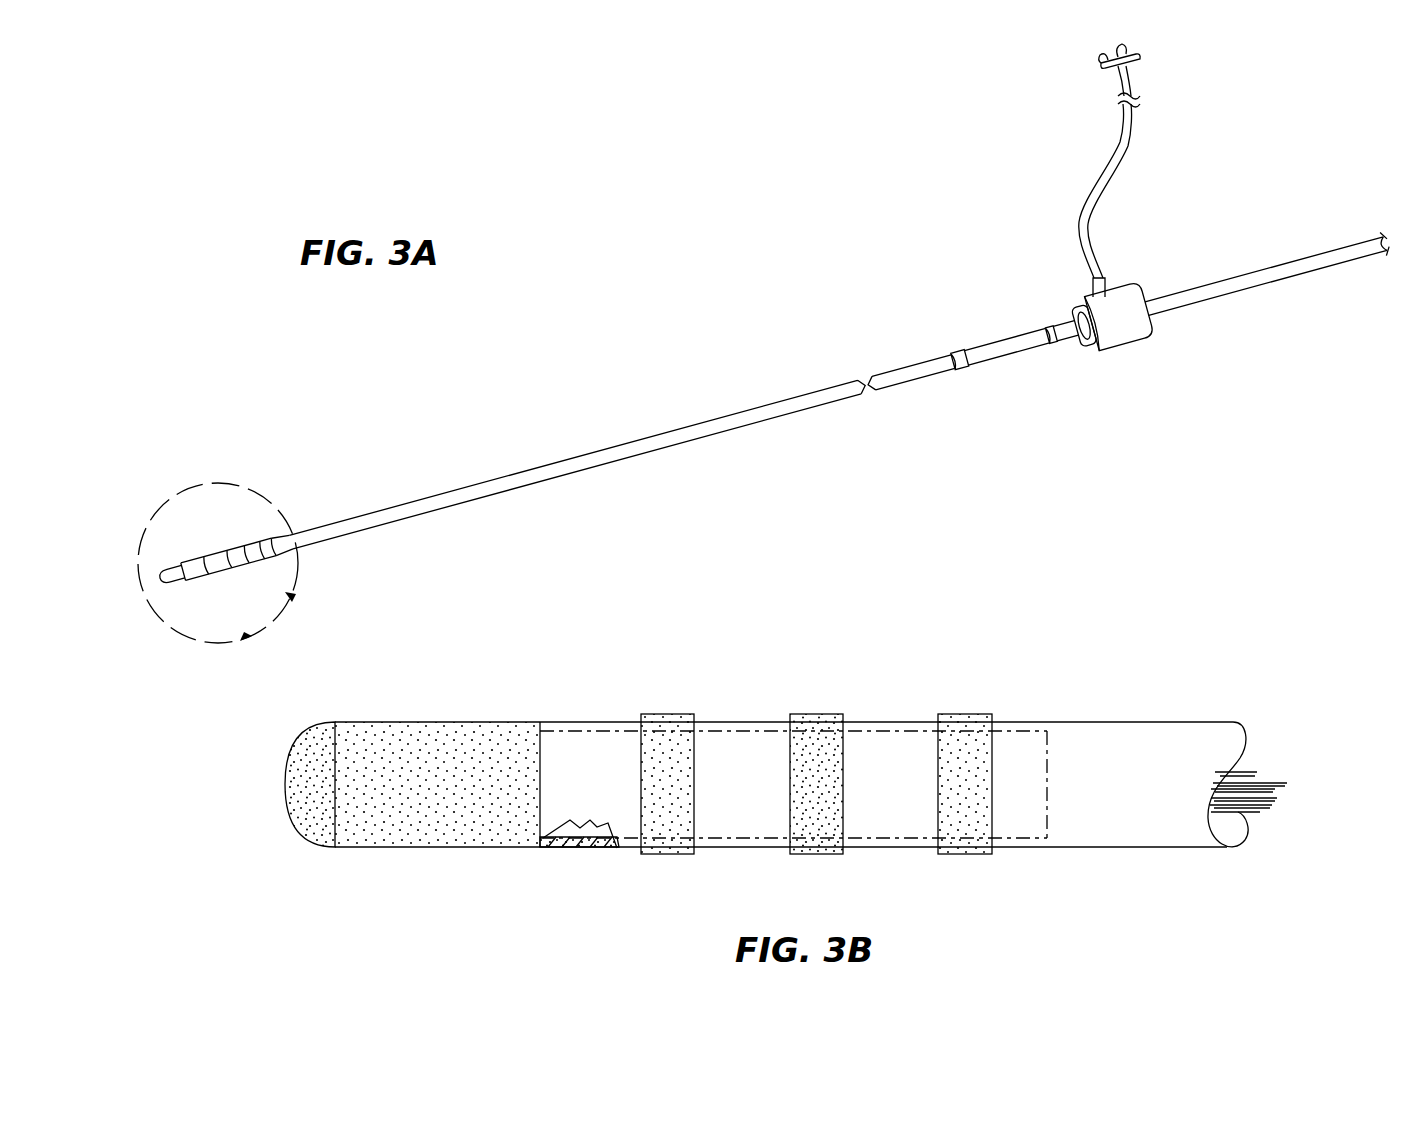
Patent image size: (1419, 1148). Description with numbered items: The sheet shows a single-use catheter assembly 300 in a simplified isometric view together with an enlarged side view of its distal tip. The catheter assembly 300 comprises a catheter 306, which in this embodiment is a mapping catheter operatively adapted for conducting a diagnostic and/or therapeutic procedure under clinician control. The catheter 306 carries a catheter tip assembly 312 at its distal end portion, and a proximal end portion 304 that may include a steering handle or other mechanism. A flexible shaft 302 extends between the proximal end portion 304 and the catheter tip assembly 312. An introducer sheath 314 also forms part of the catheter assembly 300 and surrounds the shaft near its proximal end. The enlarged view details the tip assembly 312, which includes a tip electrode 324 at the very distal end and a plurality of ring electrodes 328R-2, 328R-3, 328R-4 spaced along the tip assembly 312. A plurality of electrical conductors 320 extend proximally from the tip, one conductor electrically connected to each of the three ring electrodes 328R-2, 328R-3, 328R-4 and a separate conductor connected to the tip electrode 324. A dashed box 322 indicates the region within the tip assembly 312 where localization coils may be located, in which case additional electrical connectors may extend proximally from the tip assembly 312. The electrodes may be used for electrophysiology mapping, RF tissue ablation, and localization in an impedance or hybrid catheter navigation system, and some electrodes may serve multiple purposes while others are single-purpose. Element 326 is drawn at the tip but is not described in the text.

In FIG. 3A, the catheter assembly 300 is at (560, 403).
In FIG. 3A, the flexible shaft 302 is at (917, 371).
In FIG. 3A, the proximal end portion 304 is at (1267, 275).
In FIG. 3A, the catheter 306 is at (578, 464).
In FIG. 3A, the catheter tip assembly 312 is at (226, 559).
In FIG. 3B, the catheter tip assembly 312 is at (893, 609).
In FIG. 3A, the introducer sheath 314 is at (1021, 342).
In FIG. 3B, the electrical conductors 320 is at (1249, 834).
In FIG. 3B, the dashed box 322 is at (1037, 840).
In FIG. 3B, the tip electrode 324 is at (380, 720).
In FIG. 3B, the sensor 326 is at (570, 852).
In FIG. 3B, the ring electrode 328R-2 is at (670, 714).
In FIG. 3B, the ring electrode 328R-3 is at (818, 714).
In FIG. 3B, the ring electrode 328R-4 is at (966, 714).